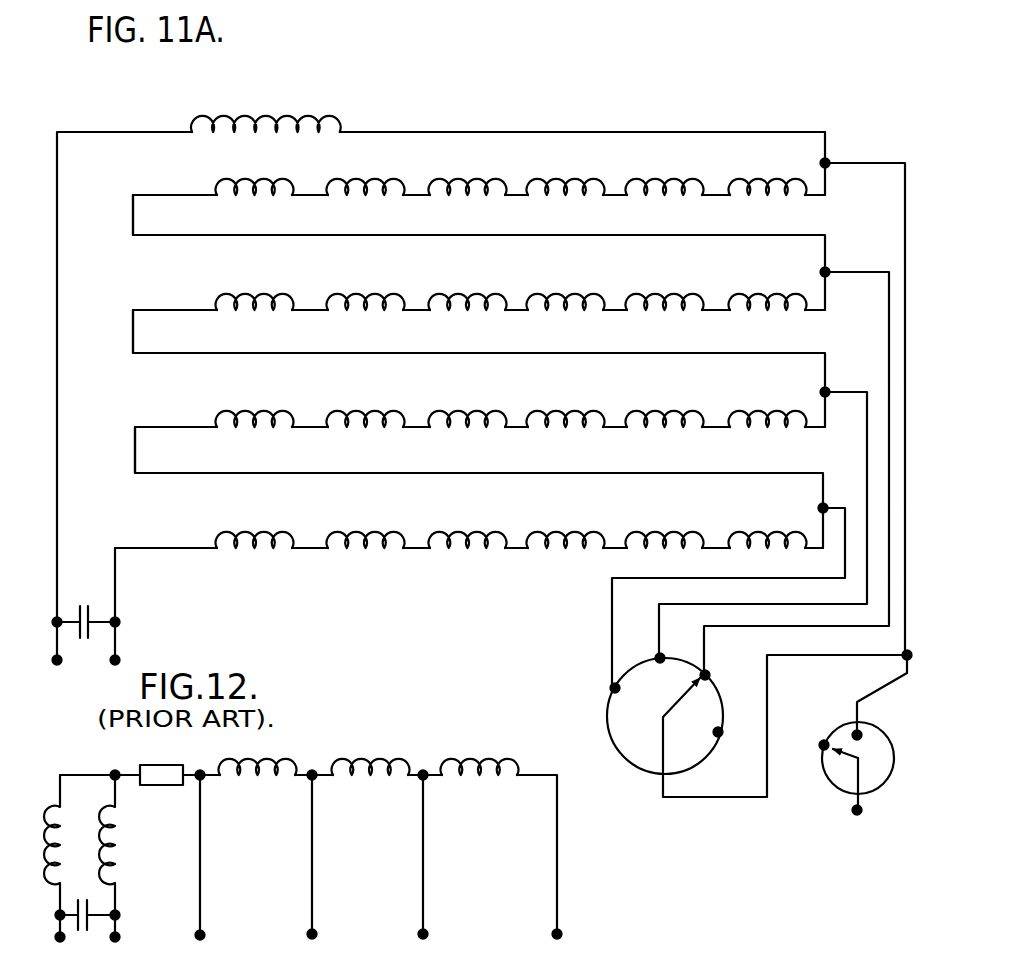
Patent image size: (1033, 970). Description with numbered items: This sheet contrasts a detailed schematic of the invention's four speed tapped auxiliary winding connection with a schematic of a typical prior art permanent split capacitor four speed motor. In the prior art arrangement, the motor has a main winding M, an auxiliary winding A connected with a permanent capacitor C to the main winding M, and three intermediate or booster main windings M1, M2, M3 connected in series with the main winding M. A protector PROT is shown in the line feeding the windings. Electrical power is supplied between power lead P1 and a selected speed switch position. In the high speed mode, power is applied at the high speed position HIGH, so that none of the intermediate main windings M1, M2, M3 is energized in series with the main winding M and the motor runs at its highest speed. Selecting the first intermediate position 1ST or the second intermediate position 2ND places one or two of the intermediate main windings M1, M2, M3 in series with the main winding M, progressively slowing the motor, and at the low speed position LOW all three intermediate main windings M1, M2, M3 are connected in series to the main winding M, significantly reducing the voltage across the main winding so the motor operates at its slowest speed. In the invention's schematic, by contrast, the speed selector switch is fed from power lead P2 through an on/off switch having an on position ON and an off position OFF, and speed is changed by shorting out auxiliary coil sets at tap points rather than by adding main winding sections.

In FIG. 11A, the power lead P1 is at (76, 672).
In FIG. 12, the power lead P1 is at (80, 950).
In FIG. 11A, the power lead P2 is at (874, 790).
In FIG. 11A, the low speed position LOW is at (587, 684).
In FIG. 12, the low speed position LOW is at (564, 948).
In FIG. 11A, the second intermediate speed position 2ND is at (679, 645).
In FIG. 12, the second intermediate speed position 2ND is at (437, 871).
In FIG. 11A, the first intermediate speed position 1ST is at (724, 664).
In FIG. 12, the first intermediate speed position 1ST is at (327, 871).
In FIG. 11A, the high speed position HIGH is at (737, 747).
In FIG. 12, the high speed position HIGH is at (207, 871).
In FIG. 11A, the off position OFF is at (834, 756).
In FIG. 11A, the on position ON is at (872, 718).
In FIG. 12, the thermal protector PROT is at (160, 765).
In FIG. 12, the first intermediate main winding M1 is at (258, 753).
In FIG. 12, the second intermediate main winding M2 is at (371, 753).
In FIG. 12, the third intermediate main winding M3 is at (480, 753).
In FIG. 12, the main winding M is at (46, 856).
In FIG. 12, the auxiliary winding A is at (121, 856).
In FIG. 12, the permanent capacitor C is at (87, 902).